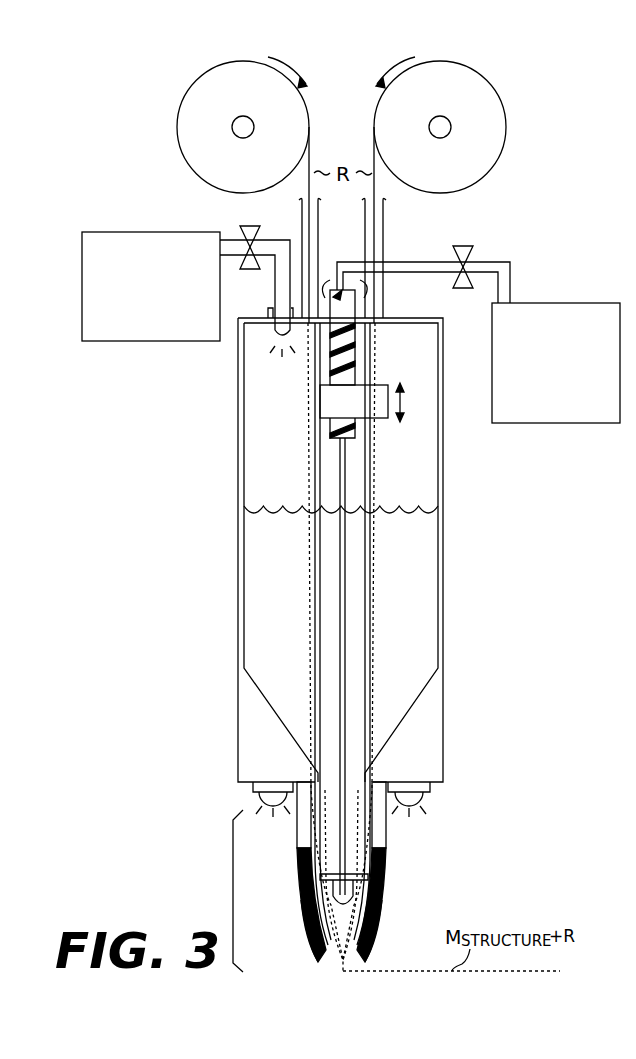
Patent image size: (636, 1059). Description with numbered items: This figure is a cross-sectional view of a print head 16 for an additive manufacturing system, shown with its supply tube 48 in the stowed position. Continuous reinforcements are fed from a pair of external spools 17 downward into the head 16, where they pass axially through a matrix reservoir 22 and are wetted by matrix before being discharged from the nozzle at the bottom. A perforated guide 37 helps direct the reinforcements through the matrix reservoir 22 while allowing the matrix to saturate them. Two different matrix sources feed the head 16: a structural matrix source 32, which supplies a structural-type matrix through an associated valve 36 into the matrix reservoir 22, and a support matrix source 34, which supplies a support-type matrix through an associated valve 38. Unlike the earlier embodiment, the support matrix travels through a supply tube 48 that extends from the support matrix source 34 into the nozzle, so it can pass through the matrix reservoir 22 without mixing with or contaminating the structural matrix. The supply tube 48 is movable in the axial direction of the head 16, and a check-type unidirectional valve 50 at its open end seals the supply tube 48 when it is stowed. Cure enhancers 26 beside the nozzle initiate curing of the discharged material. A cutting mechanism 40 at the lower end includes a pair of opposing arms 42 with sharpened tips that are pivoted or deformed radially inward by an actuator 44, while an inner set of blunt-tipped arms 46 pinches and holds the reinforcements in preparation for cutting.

The head 16 is at (128, 758).
The external spools 17 is at (255, 170).
The matrix reservoir 22 is at (443, 462).
The cure enhancers 26 is at (251, 798).
The structural matrix source 32 is at (162, 310).
The support matrix source 34 is at (566, 391).
The valve 36 is at (262, 236).
The perforated guide 37 is at (308, 455).
The valve 38 is at (475, 256).
The cutting mechanism 40 is at (233, 888).
The opposing arms 42 is at (384, 925).
The actuator 44 is at (386, 830).
The arms 46 is at (387, 910).
The supply tube 48 is at (347, 626).
The unidirectional valve 50 is at (362, 415).